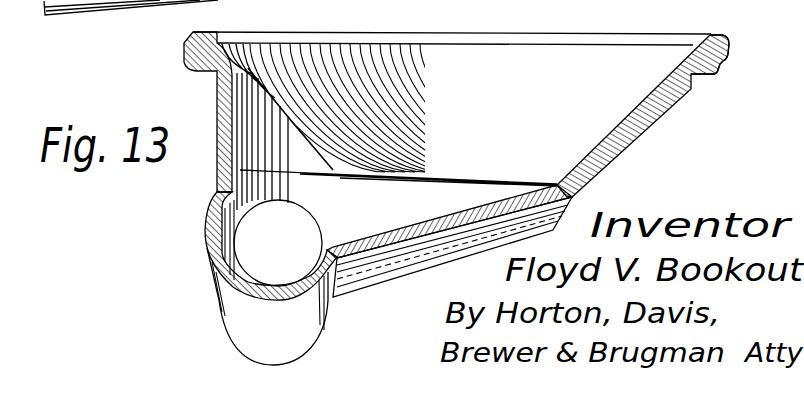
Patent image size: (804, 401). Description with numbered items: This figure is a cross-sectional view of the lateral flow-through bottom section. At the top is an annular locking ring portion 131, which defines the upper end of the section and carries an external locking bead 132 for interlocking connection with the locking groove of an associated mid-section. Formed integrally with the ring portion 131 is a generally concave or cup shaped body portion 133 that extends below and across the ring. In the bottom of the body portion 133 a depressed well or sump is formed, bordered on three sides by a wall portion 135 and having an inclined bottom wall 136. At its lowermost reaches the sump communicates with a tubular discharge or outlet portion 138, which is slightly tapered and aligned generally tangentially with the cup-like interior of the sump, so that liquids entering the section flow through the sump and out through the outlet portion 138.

The annular locking ring portion 131 is at (706, 33).
The external locking bead 132 is at (730, 41).
The cup shaped body portion 133 is at (633, 130).
The wall portion 135 is at (393, 190).
The inclined bottom wall 136 is at (497, 200).
The tubular discharge or outlet portion 138 is at (227, 317).